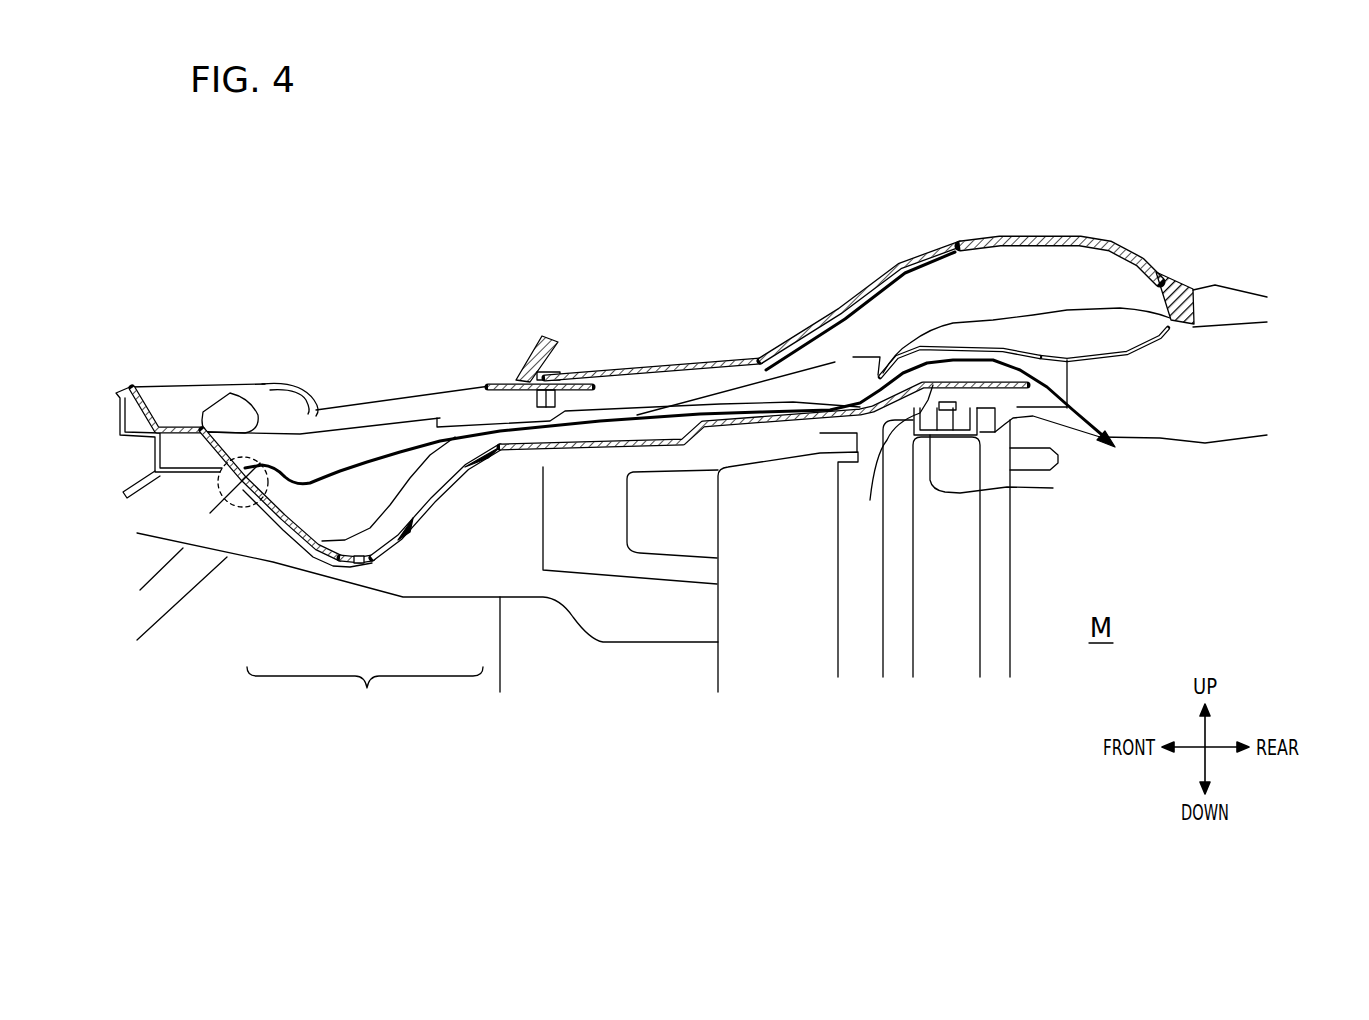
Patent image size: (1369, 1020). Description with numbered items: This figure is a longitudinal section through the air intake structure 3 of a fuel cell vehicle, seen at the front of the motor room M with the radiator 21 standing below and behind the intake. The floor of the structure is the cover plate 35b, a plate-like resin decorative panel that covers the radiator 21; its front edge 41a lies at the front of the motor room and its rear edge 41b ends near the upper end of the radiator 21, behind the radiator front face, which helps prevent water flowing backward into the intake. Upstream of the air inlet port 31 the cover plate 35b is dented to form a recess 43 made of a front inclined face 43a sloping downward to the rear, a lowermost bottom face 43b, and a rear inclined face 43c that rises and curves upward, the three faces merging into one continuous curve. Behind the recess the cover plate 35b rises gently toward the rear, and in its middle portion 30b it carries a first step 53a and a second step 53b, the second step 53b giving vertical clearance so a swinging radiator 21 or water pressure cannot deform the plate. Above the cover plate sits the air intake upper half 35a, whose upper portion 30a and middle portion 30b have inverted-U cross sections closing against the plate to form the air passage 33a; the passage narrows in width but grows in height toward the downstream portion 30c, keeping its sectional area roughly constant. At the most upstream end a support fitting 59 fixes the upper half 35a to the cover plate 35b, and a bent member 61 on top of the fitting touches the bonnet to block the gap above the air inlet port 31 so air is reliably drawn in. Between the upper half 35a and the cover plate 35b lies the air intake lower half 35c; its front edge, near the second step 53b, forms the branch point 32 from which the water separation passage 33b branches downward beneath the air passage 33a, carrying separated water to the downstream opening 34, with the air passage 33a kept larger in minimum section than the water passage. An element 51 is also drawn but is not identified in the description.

The air intake structure 3 is at (968, 160).
The radiator 21 is at (1010, 558).
The upper portion 30a is at (520, 320).
The middle portion 30b is at (930, 195).
The roof panel rear portion 30c is at (933, 196).
The air inlet port 31 is at (478, 412).
The branch point 32 is at (855, 405).
The air passage 33a is at (913, 313).
The water separation passage 33b is at (905, 367).
The downstream opening 34 is at (1042, 373).
The air intake upper half 35a is at (1143, 256).
The cover plate 35b is at (1053, 488).
The air intake lower half 35c is at (1167, 340).
The front edge 41a is at (157, 405).
The rear edge 41b is at (1058, 462).
The recess 43 is at (352, 728).
The front inclined face 43a is at (287, 527).
The bottom face 43b is at (372, 562).
The rear inclined face 43c is at (407, 528).
The lip 51 is at (370, 561).
The first step 53a is at (698, 430).
The second step 53b is at (870, 500).
The support fitting 59 is at (497, 380).
The bent member 61 is at (525, 350).